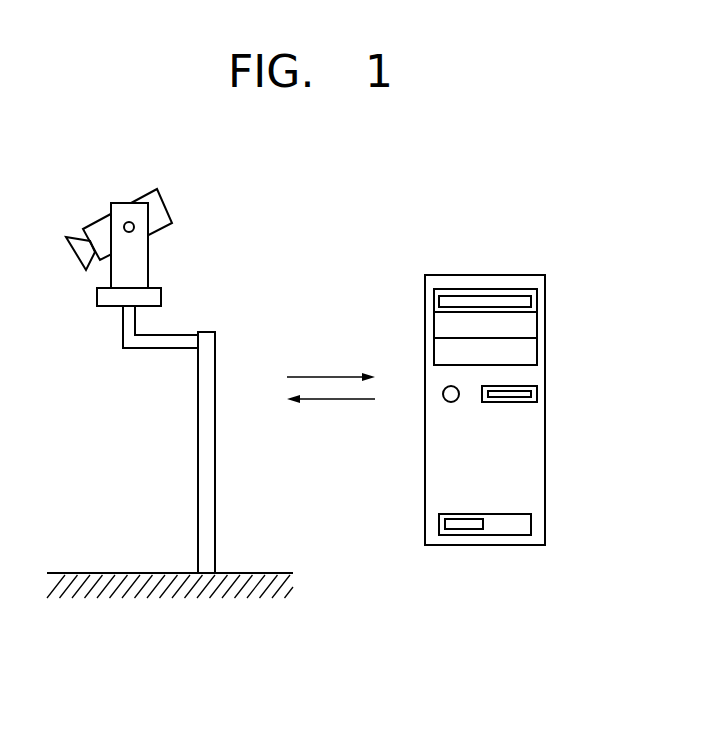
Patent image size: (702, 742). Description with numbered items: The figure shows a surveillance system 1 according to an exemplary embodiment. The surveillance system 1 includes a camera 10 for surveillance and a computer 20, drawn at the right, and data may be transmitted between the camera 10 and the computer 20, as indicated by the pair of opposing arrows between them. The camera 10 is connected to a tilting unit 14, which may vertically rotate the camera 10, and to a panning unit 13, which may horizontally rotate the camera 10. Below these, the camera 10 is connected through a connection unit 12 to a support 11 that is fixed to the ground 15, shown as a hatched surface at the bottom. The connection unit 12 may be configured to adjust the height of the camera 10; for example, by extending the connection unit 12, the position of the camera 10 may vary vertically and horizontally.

The surveillance system 1 is at (398, 222).
The camera 10 is at (165, 202).
The support 11 is at (215, 480).
The connection unit 12 is at (162, 349).
The panning unit 13 is at (162, 293).
The tilting unit 14 is at (125, 209).
The ground 15 is at (83, 573).
The computer 20 is at (492, 275).